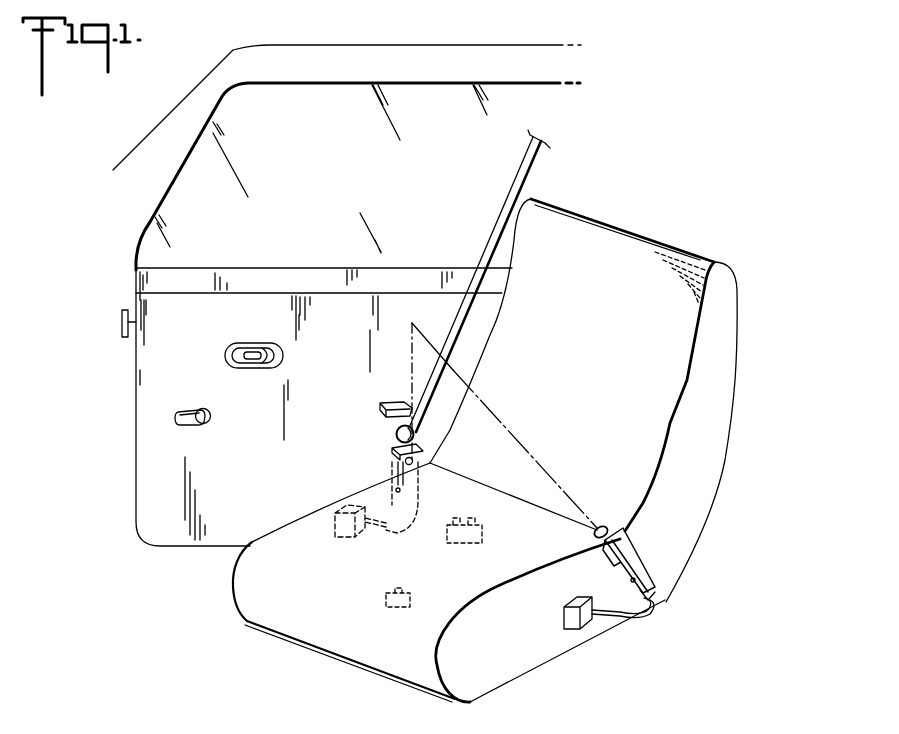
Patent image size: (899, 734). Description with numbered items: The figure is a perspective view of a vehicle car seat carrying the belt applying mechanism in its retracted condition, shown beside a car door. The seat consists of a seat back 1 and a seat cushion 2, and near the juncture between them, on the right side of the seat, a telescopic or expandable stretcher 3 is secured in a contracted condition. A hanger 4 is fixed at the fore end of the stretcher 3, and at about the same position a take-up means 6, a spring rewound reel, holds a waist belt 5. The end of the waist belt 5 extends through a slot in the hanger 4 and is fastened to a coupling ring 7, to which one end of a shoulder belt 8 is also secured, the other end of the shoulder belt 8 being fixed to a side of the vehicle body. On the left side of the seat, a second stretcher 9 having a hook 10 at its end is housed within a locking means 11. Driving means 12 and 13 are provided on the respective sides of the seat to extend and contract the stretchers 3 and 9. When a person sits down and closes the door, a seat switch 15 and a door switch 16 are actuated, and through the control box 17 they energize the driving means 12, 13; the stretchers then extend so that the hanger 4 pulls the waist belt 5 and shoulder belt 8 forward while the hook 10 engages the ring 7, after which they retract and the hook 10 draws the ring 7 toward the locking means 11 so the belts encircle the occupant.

The seat back 1 is at (725, 397).
The seat cushion 2 is at (517, 667).
The stretcher 3 is at (414, 433).
The hanger 4 is at (392, 453).
The waist belt 5 is at (393, 472).
The take-up means 6 is at (382, 535).
The coupling ring 7 is at (396, 432).
The shoulder belt 8 is at (509, 197).
The stretcher 9 is at (655, 593).
The hook 10 is at (603, 526).
The locking means 11 is at (645, 537).
The driving means 12 is at (342, 537).
The driving means 13 is at (587, 625).
The seat switch 15 is at (413, 597).
The door switch 16 is at (122, 318).
The control box 17 is at (485, 531).